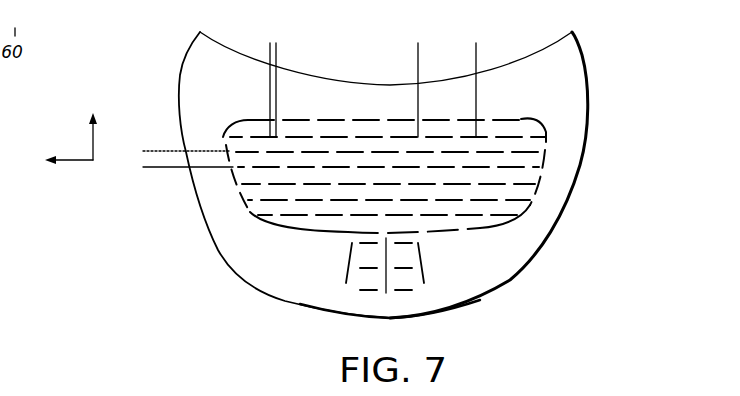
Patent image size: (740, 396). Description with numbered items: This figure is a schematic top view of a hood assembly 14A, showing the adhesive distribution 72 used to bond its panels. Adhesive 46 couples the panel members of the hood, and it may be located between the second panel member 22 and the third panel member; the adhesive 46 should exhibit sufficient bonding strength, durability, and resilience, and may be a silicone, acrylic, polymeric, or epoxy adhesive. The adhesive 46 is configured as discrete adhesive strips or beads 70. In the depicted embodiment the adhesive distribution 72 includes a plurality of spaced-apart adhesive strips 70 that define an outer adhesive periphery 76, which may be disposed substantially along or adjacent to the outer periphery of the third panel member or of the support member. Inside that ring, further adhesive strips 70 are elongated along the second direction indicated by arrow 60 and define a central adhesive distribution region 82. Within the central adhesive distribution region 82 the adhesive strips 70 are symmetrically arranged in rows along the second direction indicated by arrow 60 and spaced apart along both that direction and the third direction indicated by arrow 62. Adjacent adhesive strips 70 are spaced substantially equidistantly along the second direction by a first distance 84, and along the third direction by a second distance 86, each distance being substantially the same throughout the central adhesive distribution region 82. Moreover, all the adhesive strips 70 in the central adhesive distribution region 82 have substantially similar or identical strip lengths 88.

The sole 14A is at (386, 318).
The second panel member 22 is at (547, 253).
The adhesive 46 is at (529, 219).
The arrow indicating second direction 60 is at (78, 158).
The arrow indicating third direction 62 is at (93, 135).
The adhesive strip 70 is at (547, 122).
The adhesive distribution 72 is at (427, 165).
The outer adhesive periphery 76 is at (538, 177).
The central adhesive distribution region 82 is at (338, 150).
The first distance 84 is at (248, 52).
The second distance 86 is at (154, 130).
The strip length 88 is at (419, 52).